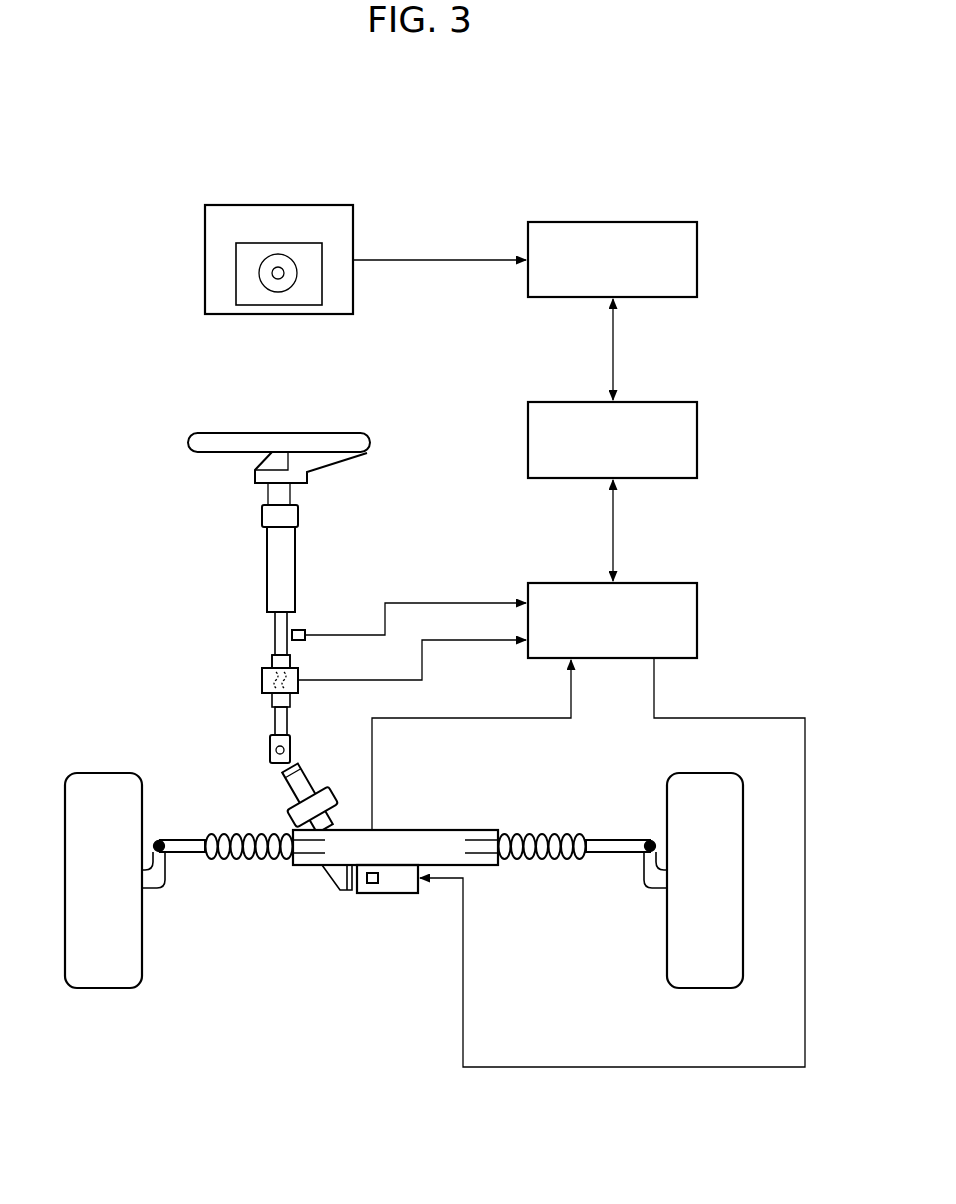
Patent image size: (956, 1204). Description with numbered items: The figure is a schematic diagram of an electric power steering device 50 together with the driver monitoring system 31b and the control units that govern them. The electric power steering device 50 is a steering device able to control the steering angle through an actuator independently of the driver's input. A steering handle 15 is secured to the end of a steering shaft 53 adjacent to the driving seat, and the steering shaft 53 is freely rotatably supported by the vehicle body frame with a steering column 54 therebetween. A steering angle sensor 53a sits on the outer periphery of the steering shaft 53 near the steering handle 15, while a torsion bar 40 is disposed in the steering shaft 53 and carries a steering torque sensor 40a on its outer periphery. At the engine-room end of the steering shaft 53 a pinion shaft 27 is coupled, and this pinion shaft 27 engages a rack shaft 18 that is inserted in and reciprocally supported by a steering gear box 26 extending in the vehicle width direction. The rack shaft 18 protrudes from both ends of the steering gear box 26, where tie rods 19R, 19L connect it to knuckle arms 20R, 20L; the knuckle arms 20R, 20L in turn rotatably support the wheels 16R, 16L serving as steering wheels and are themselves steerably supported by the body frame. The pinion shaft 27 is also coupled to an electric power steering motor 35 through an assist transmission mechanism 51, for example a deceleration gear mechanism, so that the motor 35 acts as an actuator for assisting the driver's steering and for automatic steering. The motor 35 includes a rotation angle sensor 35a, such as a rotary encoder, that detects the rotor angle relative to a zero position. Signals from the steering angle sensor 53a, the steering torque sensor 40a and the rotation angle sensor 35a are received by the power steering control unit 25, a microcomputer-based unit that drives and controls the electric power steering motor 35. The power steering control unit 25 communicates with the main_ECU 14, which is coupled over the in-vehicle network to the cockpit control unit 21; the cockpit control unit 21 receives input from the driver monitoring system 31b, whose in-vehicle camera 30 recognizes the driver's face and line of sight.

The driver monitoring system 31b is at (282, 205).
The in-vehicle camera 30 is at (236, 273).
The cockpit control unit 21 is at (682, 222).
The main_ECU 14 is at (682, 402).
The power steering control unit 25 is at (678, 583).
The steering handle 15 is at (278, 433).
The electric power steering device 50 is at (163, 513).
The steering column 54 is at (267, 563).
The steering shaft 53 is at (275, 637).
The steering angle sensor 53a is at (302, 630).
The torsion bar 40 is at (262, 680).
The steering torque sensor 40a is at (300, 672).
The pinion shaft 27 is at (280, 785).
The steering gear box 26 is at (408, 830).
The rack shaft 18 is at (480, 840).
The tie rod 19R is at (195, 857).
The tie rod 19L is at (600, 857).
The knuckle arm 20R is at (147, 892).
The knuckle arm 20L is at (662, 892).
The wheel 16R is at (100, 990).
The wheel 16L is at (705, 990).
The assist transmission mechanism 51 is at (327, 870).
The electric power steering motor 35 is at (400, 893).
The rotation angle sensor 35a is at (370, 897).